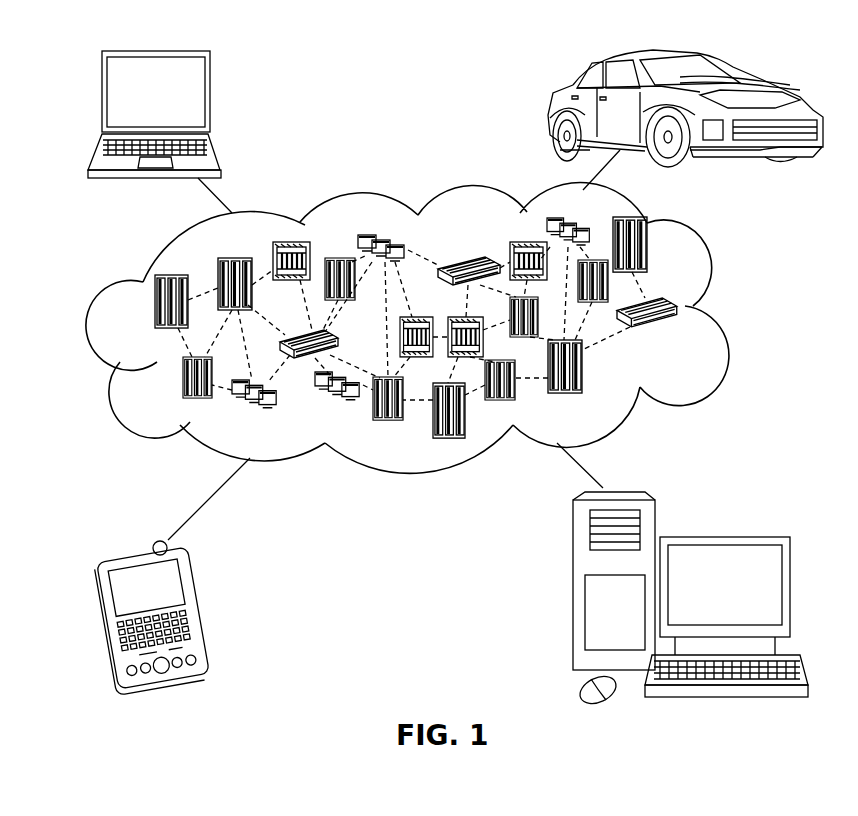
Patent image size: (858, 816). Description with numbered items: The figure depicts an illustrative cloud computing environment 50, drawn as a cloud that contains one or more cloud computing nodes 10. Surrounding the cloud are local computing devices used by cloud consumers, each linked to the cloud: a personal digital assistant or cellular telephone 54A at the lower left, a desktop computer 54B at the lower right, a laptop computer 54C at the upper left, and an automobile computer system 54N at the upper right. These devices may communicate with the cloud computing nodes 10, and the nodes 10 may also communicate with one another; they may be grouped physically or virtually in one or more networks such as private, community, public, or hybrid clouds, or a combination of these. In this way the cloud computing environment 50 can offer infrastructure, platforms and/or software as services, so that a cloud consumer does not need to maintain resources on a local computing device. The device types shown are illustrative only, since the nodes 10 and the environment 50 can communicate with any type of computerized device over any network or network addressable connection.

The cloud computing nodes 10 is at (680, 335).
The cloud computing environment 50 is at (724, 312).
The personal digital assistant or cellular telephone 54A is at (204, 608).
The desktop computer 54B is at (722, 536).
The laptop computer 54C is at (211, 95).
The automobile computer system 54N is at (548, 112).